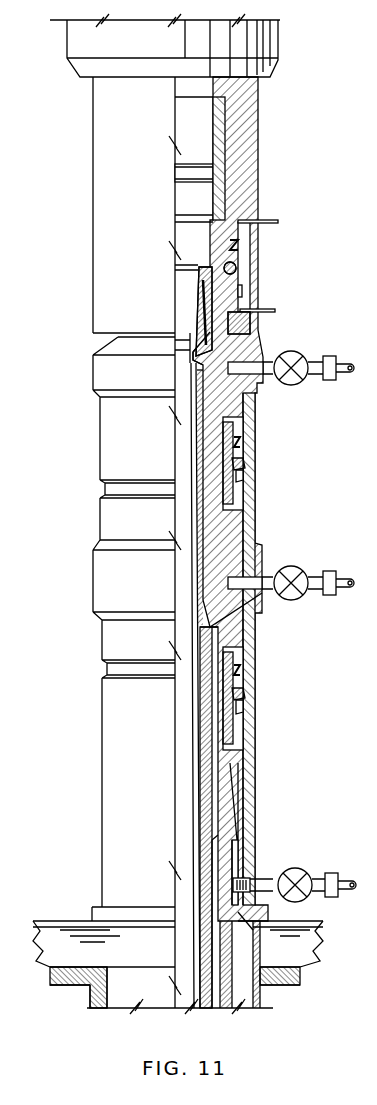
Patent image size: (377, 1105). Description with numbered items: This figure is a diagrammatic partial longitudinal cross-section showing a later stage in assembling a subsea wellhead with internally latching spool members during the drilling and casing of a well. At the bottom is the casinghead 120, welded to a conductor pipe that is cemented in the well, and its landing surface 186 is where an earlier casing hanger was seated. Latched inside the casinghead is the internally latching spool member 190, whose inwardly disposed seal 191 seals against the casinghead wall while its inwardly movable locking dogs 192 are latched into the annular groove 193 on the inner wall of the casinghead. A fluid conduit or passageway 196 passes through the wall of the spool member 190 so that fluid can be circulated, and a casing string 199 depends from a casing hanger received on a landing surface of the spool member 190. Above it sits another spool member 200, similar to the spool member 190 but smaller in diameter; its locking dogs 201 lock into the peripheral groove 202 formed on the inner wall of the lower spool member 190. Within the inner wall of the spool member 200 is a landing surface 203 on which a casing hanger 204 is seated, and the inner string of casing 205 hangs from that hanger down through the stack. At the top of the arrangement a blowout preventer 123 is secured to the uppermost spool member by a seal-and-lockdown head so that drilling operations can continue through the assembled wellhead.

The blowout preventer 123 is at (153, 48).
The casing hanger 204 is at (198, 306).
The landing surface 203 is at (195, 357).
The spool member 200 is at (250, 356).
The peripheral groove 202 is at (247, 466).
The locking dogs 201 is at (247, 476).
The spool member 190 is at (258, 561).
The inner string of casing 205 is at (193, 581).
The fluid conduit or passageway 196 is at (257, 613).
The seal 191 is at (245, 672).
The locking dogs 192 is at (245, 695).
The annular groove 193 is at (245, 706).
The casing string 199 is at (207, 718).
The casinghead 120 is at (240, 843).
The landing surface 186 is at (255, 870).